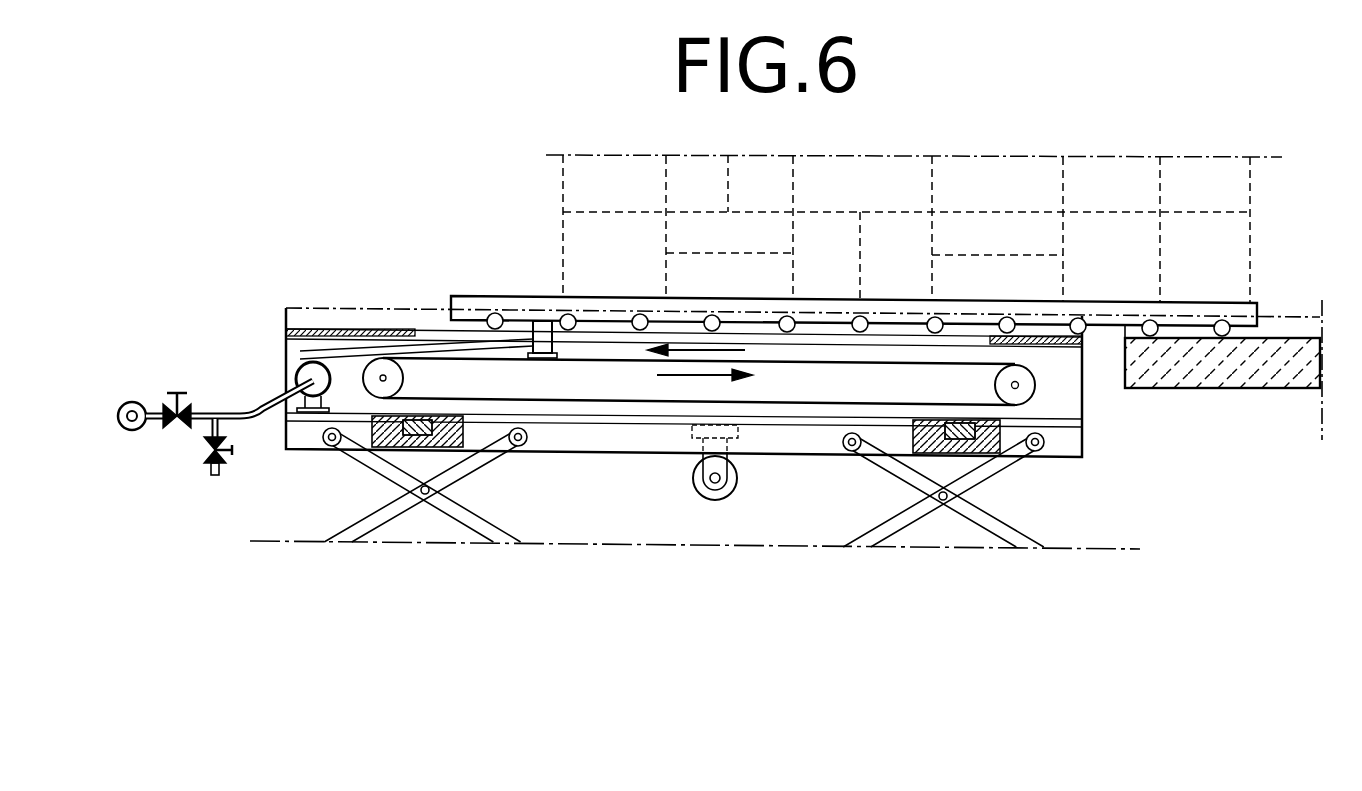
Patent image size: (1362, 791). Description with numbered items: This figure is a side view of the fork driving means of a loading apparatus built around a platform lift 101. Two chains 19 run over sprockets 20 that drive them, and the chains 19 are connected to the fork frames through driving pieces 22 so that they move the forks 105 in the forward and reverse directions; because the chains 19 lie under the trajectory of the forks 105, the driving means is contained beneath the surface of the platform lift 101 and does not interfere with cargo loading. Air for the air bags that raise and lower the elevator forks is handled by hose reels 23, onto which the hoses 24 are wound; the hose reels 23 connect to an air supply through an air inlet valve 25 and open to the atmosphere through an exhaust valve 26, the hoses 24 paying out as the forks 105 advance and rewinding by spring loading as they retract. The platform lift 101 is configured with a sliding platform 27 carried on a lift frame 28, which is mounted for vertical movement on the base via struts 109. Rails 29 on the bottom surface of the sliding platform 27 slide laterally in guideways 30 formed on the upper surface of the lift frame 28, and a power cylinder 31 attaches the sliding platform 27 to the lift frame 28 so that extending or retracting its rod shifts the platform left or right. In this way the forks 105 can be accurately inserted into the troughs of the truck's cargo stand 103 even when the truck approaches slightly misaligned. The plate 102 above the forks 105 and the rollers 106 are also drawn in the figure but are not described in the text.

The chains 19 is at (480, 361).
The sprockets 20 is at (1030, 380).
The driving pieces 22 is at (553, 340).
The hose reels 23 is at (298, 373).
The hoses 24 is at (347, 355).
The air inlet valve 25 is at (195, 408).
The exhaust valve 26 is at (212, 472).
The sliding platform 27 is at (615, 425).
The lift frame 28 is at (560, 455).
The rails 29 is at (383, 450).
The guideways 30 is at (452, 447).
The power cylinder 31 is at (737, 484).
The platform lift 101 is at (410, 312).
The pallet plate 102 is at (517, 281).
The cargo stand 103 is at (1272, 316).
The forks 105 is at (1098, 302).
The rollers 106 is at (860, 332).
The struts 109 is at (370, 542).